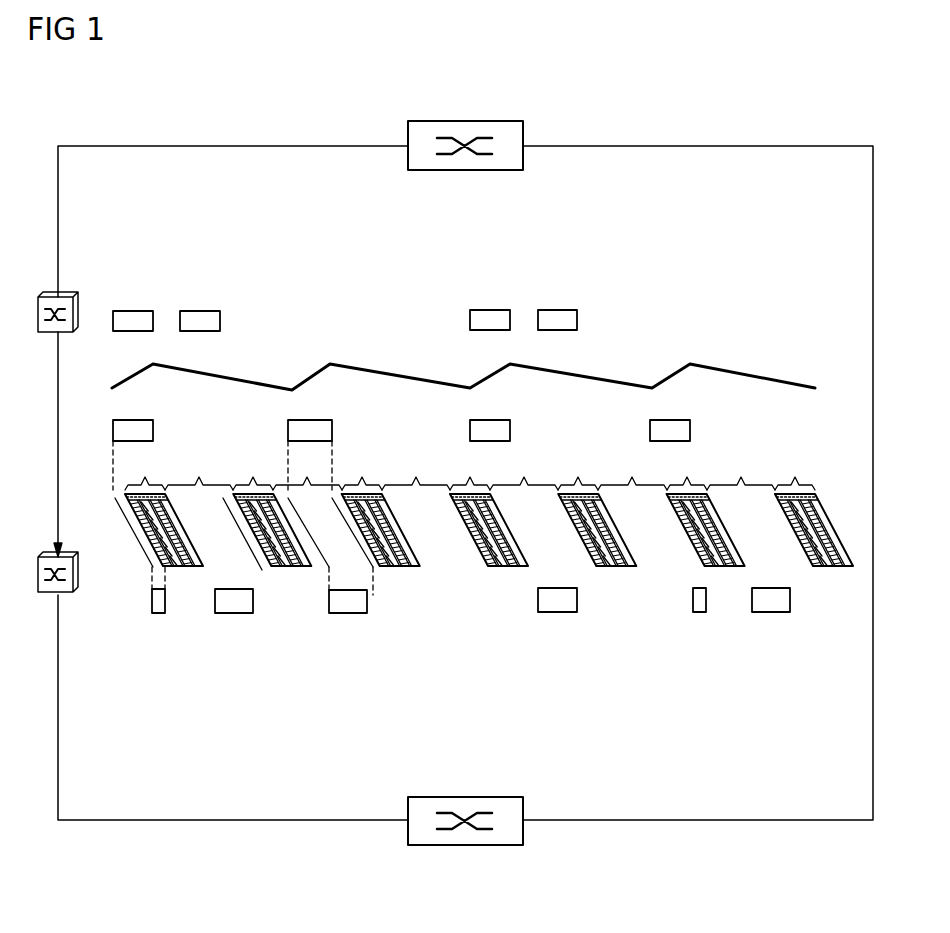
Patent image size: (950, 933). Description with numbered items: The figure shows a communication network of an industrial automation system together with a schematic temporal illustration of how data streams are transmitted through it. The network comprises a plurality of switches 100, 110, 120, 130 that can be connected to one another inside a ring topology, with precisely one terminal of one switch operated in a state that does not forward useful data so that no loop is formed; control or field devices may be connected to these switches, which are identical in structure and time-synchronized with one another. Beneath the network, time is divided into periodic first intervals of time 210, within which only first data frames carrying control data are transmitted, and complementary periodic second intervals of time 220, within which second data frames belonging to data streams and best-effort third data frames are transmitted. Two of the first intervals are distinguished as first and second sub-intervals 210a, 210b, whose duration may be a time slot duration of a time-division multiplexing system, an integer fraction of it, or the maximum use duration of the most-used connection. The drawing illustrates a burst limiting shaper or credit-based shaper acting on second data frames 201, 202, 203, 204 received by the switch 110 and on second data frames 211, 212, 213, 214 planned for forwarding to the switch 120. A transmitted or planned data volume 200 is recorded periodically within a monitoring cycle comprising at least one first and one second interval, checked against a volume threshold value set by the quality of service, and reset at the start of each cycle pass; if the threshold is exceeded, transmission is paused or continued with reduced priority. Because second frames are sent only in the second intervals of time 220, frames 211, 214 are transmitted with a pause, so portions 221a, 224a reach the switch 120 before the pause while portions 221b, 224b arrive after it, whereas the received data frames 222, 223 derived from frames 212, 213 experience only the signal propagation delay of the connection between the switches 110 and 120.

The switch 100 is at (462, 121).
The switch 110 is at (65, 297).
The switch 120 is at (65, 596).
The switch 130 is at (466, 845).
The transmitted or planned data volume 200 is at (722, 372).
The second data frame 201 is at (131, 311).
The second data frame 202 is at (198, 311).
The second data frame 203 is at (486, 310).
The second data frame 204 is at (554, 310).
The first interval of time 210 is at (490, 546).
The first sub-interval 210a is at (821, 567).
The second sub-interval 210b is at (716, 567).
The second data frame 211 is at (153, 431).
The second data frame 212 is at (332, 431).
The second data frame 213 is at (510, 431).
The second data frame 214 is at (690, 431).
The second interval of time 220 is at (445, 508).
The received data frame 221a is at (158, 613).
The received data frame 221b is at (235, 613).
The received data frame 222 is at (350, 613).
The received data frame 223 is at (560, 612).
The received data frame 224a is at (700, 612).
The received data frame 224b is at (775, 612).